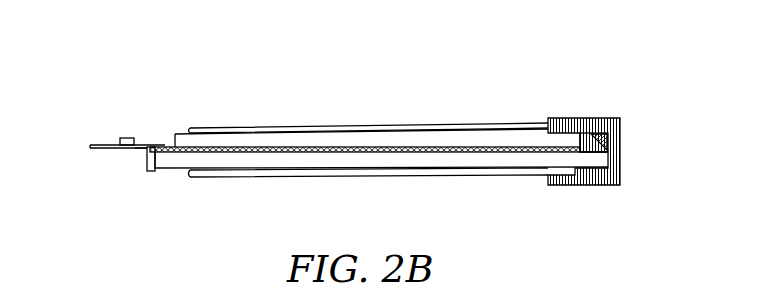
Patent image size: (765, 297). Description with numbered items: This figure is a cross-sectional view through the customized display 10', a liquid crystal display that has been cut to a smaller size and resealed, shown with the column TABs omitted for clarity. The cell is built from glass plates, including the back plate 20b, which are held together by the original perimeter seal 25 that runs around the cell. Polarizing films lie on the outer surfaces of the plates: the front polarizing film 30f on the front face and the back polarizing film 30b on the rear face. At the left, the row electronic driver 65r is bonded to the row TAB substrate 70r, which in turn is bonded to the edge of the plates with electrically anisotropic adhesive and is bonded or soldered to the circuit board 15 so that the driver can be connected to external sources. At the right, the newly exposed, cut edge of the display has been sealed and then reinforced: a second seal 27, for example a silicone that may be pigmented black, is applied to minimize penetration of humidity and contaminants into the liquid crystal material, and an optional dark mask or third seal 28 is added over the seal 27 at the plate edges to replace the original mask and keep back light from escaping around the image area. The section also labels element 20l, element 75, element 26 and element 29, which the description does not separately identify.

The customized display 10' is at (357, 146).
The circuit board 15 is at (93, 145).
The row electronic driver 65r is at (128, 138).
The row TAB substrate 70r is at (140, 150).
The end bar 75 is at (155, 172).
The back plate 20b is at (147, 172).
The back polarizing film 30b is at (205, 178).
The upper layer 20l is at (175, 147).
The front polarizing film 30f is at (220, 127).
The perimeter seal 25 is at (467, 153).
The mask or third seal 28 is at (618, 118).
The seal block 29 is at (580, 118).
The second seal 27 is at (604, 140).
The lower layer end 26 is at (583, 152).